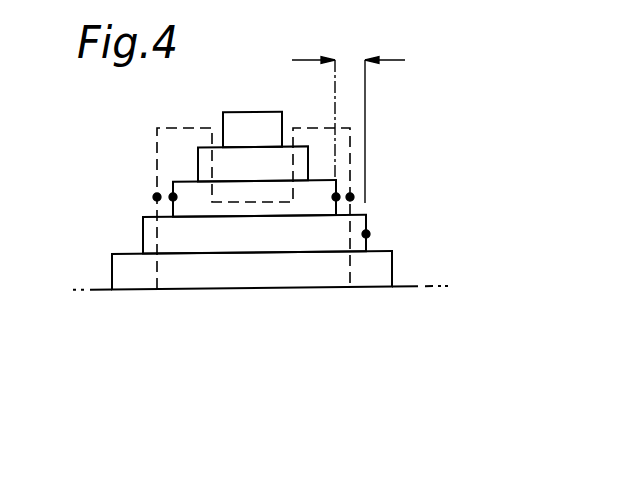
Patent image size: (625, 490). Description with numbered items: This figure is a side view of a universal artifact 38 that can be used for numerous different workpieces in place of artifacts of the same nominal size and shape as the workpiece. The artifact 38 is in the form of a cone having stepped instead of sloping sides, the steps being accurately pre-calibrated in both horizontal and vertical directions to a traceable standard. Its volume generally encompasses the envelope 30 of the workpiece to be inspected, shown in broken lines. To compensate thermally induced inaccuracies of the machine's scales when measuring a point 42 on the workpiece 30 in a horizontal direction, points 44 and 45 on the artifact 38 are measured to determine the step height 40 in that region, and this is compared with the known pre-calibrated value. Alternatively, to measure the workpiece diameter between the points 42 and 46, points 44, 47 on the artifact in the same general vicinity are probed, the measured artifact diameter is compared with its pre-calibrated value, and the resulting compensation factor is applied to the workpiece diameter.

The envelope of the workpiece 30 is at (307, 122).
The universal artifact 38 is at (112, 238).
The step height 40 is at (352, 46).
The point on the workpiece 42 is at (357, 190).
The point on the artifact 44 is at (336, 197).
The point on the artifact 45 is at (366, 234).
The point on the workpiece 46 is at (151, 195).
The point on the artifact 47 is at (173, 197).